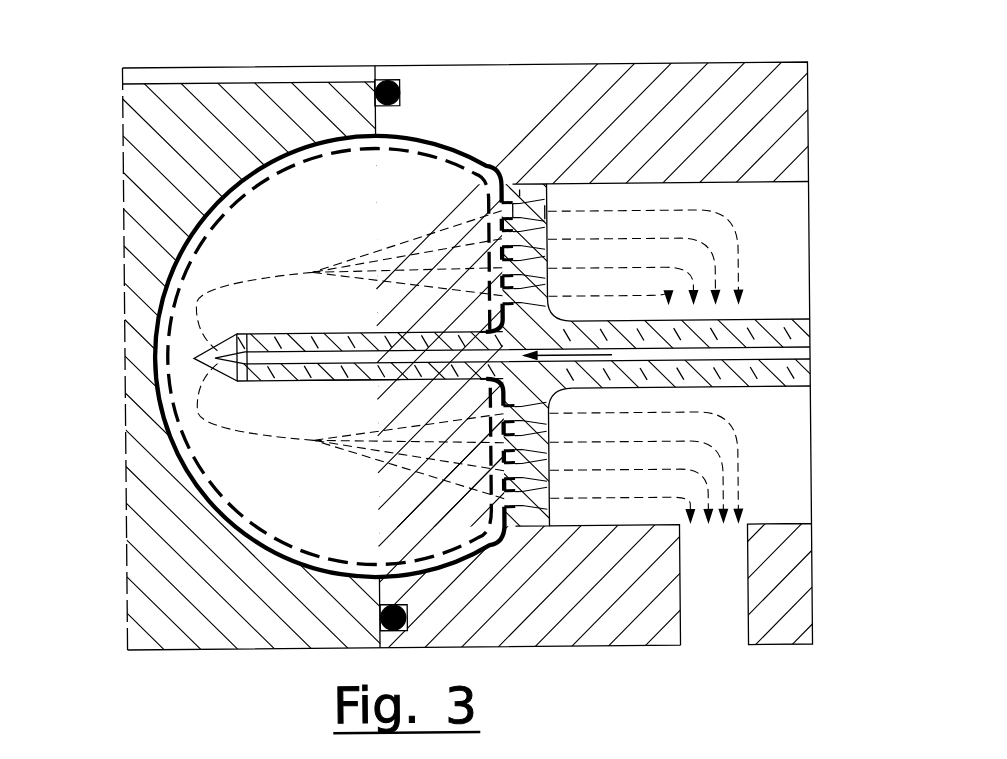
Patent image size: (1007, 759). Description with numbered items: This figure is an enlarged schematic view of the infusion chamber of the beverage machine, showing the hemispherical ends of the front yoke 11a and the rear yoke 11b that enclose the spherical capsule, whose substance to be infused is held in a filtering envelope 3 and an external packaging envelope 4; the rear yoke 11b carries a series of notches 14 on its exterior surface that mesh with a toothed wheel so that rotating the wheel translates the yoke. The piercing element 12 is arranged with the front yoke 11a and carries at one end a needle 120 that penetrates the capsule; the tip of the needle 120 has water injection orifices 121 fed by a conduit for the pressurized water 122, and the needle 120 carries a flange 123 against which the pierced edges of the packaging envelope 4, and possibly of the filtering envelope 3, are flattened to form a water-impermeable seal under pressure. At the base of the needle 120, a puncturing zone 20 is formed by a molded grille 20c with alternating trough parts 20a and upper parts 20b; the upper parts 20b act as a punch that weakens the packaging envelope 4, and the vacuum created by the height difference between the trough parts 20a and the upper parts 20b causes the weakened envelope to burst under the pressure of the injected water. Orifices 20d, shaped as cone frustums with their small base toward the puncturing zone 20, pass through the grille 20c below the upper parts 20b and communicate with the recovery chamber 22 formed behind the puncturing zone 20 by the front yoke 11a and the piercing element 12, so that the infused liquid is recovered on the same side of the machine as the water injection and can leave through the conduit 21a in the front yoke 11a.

The filtering envelope 3 is at (480, 160).
The packaging envelope 4 is at (425, 152).
The front yoke 11a is at (710, 85).
The rear yoke 11b is at (140, 150).
The piercing element 12 is at (784, 323).
The series of notches 14 is at (240, 64).
The puncturing zone 20 is at (474, 503).
The trough parts 20a is at (513, 209).
The upper parts 20b is at (501, 196).
The molded grille 20c is at (526, 194).
The orifices 20d is at (546, 212).
The conduit 21a is at (708, 610).
The recovery chamber 22 is at (784, 243).
The needle 120 is at (337, 379).
The water injection orifices 121 is at (226, 375).
The conduit for the pressurized water 122 is at (780, 358).
The flange 123 is at (500, 400).